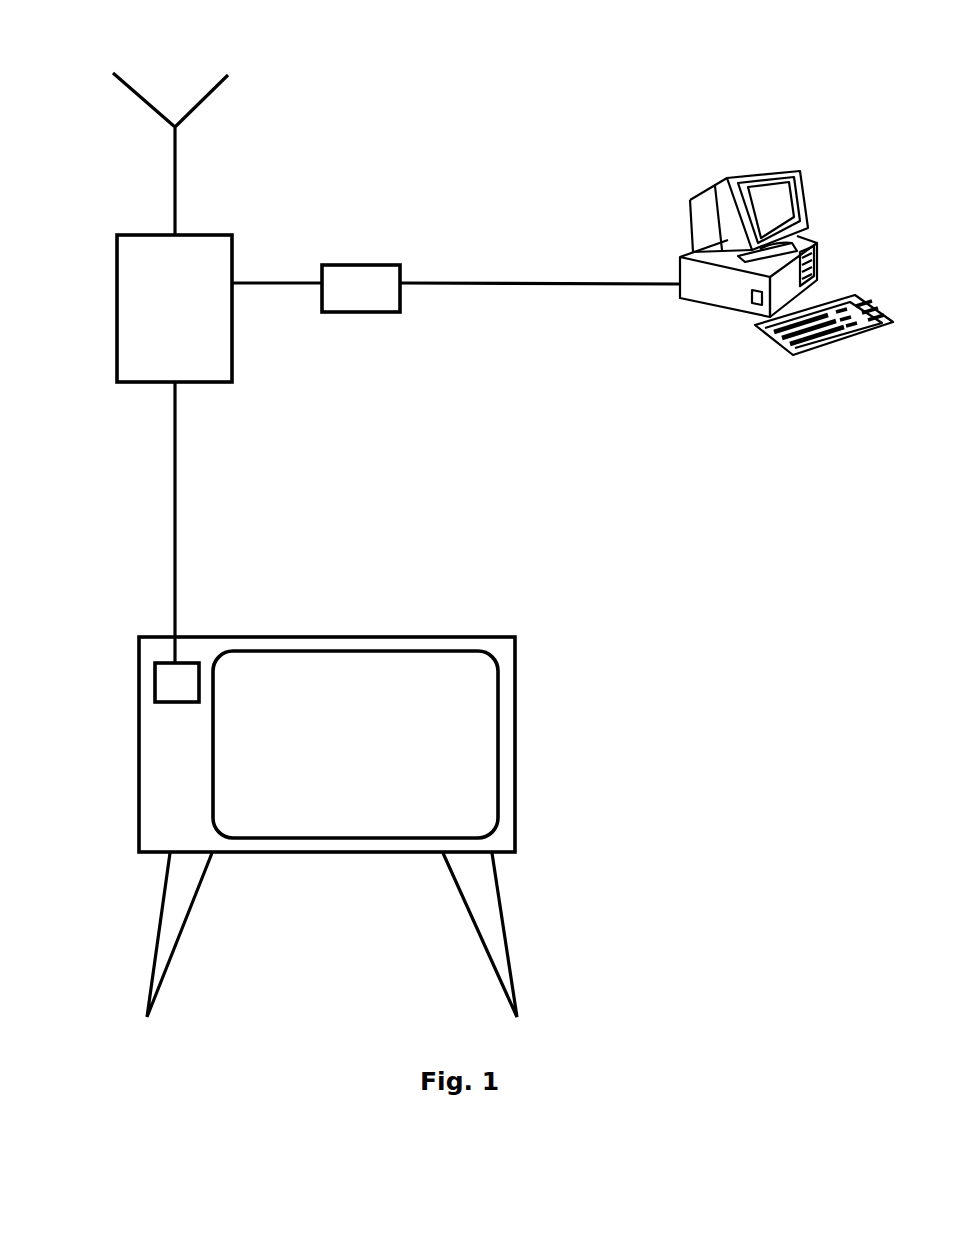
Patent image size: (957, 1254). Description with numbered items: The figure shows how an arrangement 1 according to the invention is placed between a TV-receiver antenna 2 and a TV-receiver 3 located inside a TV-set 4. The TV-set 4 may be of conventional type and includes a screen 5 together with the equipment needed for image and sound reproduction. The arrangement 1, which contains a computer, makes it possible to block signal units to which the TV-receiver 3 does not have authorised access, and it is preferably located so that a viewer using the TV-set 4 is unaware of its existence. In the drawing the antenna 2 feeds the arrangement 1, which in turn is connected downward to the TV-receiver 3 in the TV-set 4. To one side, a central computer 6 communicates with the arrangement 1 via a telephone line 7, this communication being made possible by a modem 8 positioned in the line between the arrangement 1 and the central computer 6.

The arrangement 1 is at (216, 259).
The TV-receiver antenna 2 is at (137, 100).
The TV-receiver 3 is at (170, 676).
The TV-set 4 is at (175, 803).
The screen 5 is at (472, 697).
The central computer 6 is at (789, 205).
The telephone line 7 is at (558, 279).
The modem 8 is at (358, 283).